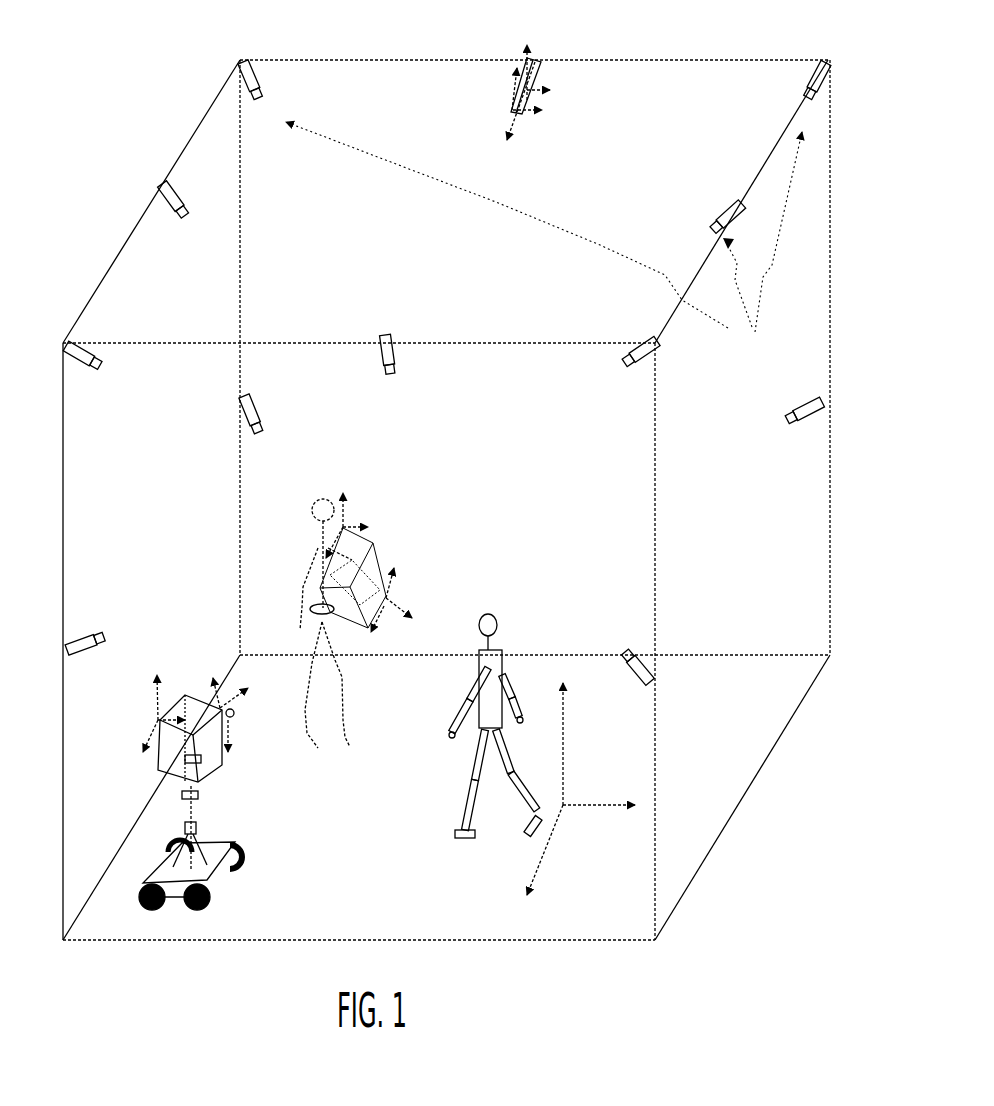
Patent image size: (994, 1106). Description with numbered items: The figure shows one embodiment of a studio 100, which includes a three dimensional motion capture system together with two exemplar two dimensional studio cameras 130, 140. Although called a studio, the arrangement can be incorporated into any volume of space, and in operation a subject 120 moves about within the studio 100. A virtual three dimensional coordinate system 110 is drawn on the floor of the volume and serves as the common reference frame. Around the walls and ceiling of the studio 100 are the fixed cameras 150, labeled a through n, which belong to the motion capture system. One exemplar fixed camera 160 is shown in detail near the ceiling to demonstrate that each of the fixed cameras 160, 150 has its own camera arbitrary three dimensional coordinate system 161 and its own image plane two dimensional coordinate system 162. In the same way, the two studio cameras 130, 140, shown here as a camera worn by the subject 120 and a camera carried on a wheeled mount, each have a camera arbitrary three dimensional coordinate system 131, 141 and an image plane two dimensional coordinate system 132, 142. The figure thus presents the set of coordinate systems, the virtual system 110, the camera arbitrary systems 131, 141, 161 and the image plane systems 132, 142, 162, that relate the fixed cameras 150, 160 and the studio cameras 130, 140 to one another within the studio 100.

The studio 100 is at (740, 808).
The Virtual 3D coordinate system 110 is at (568, 808).
The subject 120 is at (470, 745).
The studio camera 130 is at (351, 599).
The Camera Arbitrary 3D coordinate system 131 is at (345, 520).
The Image Plane 2D coordinate system 132 is at (396, 600).
The studio camera 140 is at (215, 766).
The Camera Arbitrary 3D coordinate system 141 is at (152, 714).
The Image Plane 2D coordinate system 142 is at (240, 722).
The fixed cameras 150 is at (544, 252).
The fixed camera 160 is at (563, 84).
The Camera Arbitrary 3D coordinate system 161 is at (546, 105).
The Image Plane 2D coordinate system 162 is at (490, 53).